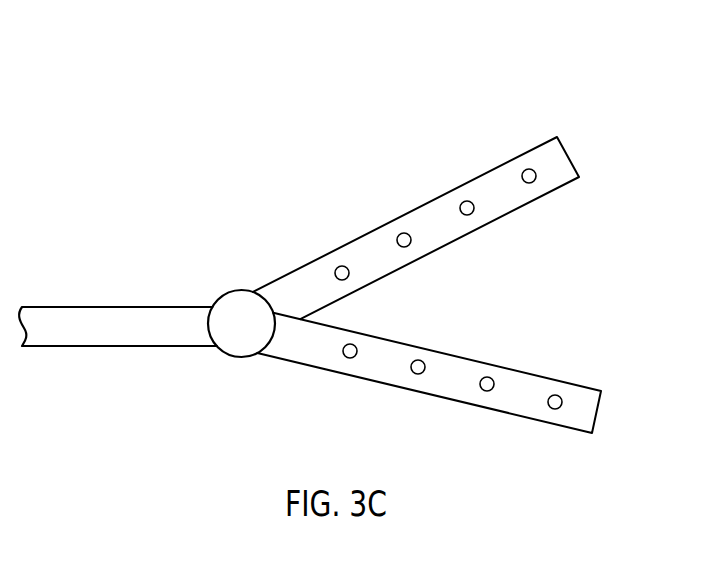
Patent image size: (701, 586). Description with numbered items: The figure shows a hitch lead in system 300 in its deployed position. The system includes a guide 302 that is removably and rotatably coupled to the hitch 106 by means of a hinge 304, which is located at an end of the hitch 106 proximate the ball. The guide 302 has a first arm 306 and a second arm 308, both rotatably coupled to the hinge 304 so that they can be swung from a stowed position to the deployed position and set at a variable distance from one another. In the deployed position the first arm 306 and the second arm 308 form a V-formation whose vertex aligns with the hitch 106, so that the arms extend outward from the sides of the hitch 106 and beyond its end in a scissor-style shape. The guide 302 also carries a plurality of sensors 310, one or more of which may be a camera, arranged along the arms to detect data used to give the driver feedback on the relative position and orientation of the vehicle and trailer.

The hitch 106 is at (185, 307).
The hitch lead in system 300 is at (510, 74).
The guide 302 is at (575, 237).
The hinge 304 is at (242, 362).
The first arm 306 is at (498, 175).
The second arm 308 is at (590, 408).
The sensors 310 is at (404, 233).